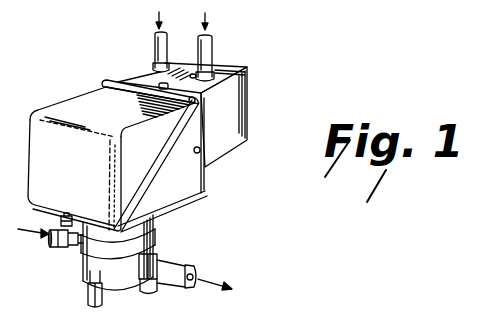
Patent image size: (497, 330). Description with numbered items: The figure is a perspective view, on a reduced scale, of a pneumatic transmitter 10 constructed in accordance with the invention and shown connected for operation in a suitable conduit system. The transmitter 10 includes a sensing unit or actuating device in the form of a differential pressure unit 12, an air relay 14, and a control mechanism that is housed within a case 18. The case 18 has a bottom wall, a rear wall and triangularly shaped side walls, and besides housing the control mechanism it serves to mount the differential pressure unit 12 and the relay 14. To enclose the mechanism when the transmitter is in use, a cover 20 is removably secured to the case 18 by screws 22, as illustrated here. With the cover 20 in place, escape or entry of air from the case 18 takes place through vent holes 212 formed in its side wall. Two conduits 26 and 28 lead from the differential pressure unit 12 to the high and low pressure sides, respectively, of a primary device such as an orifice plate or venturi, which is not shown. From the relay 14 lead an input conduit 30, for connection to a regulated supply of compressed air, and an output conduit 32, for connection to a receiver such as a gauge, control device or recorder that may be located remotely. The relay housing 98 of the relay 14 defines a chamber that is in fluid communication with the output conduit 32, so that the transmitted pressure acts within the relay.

The transmitter 10 is at (58, 95).
The differential pressure unit 12 is at (257, 102).
The air relay 14 is at (161, 244).
The case 18 is at (203, 197).
The cover 20 is at (85, 103).
The screws 22 is at (198, 102).
The conduit 26 is at (155, 43).
The conduit 28 is at (210, 50).
The input conduit 30 is at (64, 248).
The output conduit 32 is at (170, 281).
The relay housing 98 is at (137, 288).
The vent holes 212 is at (195, 154).